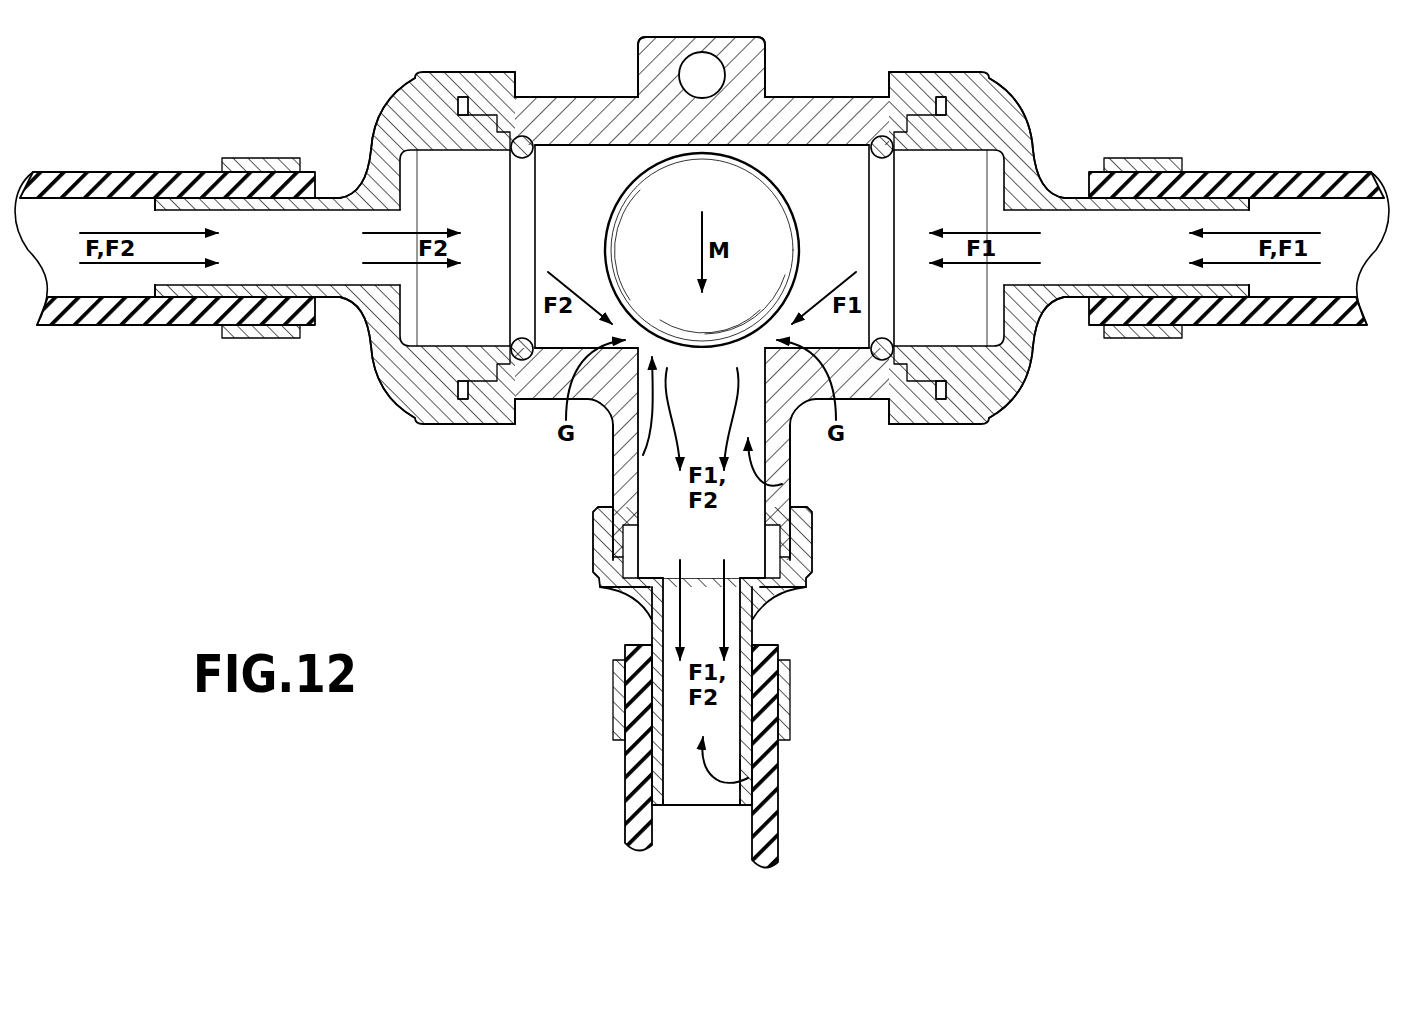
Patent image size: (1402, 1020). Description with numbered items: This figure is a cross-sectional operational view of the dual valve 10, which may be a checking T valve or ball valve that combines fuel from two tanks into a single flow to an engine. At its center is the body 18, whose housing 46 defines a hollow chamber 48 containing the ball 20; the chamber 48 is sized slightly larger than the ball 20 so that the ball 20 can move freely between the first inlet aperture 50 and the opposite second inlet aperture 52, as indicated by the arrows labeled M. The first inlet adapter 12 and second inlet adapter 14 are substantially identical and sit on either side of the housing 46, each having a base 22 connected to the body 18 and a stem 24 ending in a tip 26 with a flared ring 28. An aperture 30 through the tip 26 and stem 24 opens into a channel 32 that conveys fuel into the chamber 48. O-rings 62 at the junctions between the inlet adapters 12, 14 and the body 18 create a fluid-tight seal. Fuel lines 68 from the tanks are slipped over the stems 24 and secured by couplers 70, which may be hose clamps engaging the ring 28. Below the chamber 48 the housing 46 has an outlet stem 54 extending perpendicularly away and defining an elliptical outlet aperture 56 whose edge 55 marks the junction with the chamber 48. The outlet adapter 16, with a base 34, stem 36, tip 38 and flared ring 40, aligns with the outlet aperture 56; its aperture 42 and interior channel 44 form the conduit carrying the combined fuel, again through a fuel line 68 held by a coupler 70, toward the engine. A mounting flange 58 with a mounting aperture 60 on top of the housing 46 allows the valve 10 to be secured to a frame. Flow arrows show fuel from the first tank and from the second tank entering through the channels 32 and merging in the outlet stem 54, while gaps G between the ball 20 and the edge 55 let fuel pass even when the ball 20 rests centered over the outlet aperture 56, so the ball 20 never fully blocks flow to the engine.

The valve 10 is at (1182, 80).
The first inlet adapter 12 is at (1032, 86).
The second inlet adapter 14 is at (382, 88).
The outlet adapter 16 is at (708, 616).
The body 18 is at (563, 92).
The ball 20 is at (790, 196).
The base 22 is at (448, 72).
The stem 24 is at (265, 310).
The tip 26 is at (152, 290).
The ring 28 is at (165, 195).
The aperture 30 is at (150, 220).
The channel 32 is at (277, 245).
The base 34 is at (812, 540).
The stem 36 is at (655, 615).
The tip 38 is at (745, 810).
The flared ring flange 40 is at (757, 803).
The aperture 42 is at (685, 810).
The interior channel 44 is at (742, 778).
The housing 46 is at (818, 105).
The chamber 48 is at (580, 178).
The first inlet aperture 50 is at (1018, 280).
The second inlet aperture 52 is at (387, 282).
The outlet stem 54 is at (612, 470).
The edge 55 is at (640, 452).
The outlet aperture 56 is at (768, 478).
The mounting flange 58 is at (727, 27).
The mounting aperture 60 is at (700, 72).
The O-ring 62 is at (520, 190).
The fuel line 68 is at (70, 172).
The coupler 70 is at (255, 158).